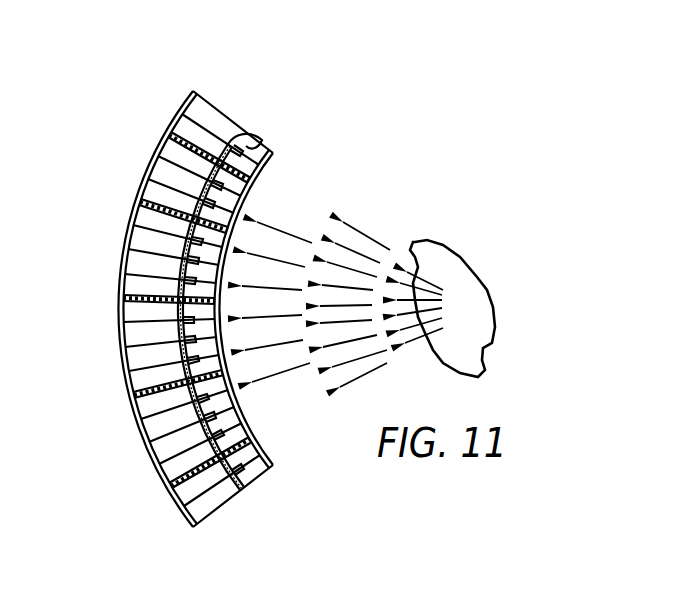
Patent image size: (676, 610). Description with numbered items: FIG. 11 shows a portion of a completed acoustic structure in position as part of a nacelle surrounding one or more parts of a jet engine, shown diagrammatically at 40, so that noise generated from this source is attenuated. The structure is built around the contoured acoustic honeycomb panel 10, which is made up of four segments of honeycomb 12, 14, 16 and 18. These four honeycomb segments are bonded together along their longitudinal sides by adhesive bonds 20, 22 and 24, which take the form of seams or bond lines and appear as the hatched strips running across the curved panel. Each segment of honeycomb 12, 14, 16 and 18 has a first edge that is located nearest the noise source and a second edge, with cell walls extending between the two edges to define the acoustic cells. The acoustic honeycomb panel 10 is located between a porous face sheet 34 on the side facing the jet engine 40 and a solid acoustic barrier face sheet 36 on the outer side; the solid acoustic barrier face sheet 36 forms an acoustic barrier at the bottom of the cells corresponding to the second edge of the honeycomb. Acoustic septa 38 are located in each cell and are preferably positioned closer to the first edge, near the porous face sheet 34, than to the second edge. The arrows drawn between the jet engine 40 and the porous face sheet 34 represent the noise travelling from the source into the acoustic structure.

The contoured acoustic honeycomb panel 10 is at (228, 112).
The honeycomb segment 12 is at (160, 168).
The honeycomb segment 14 is at (142, 247).
The honeycomb segment 16 is at (120, 313).
The honeycomb segment 18 is at (153, 428).
The adhesive bond 20 is at (130, 203).
The adhesive bond 22 is at (120, 297).
The adhesive bond 24 is at (130, 397).
The porous face sheet 34 is at (253, 183).
The solid acoustic barrier face sheet 36 is at (177, 113).
The acoustic septa 38 is at (247, 147).
The jet engine 40 is at (473, 295).